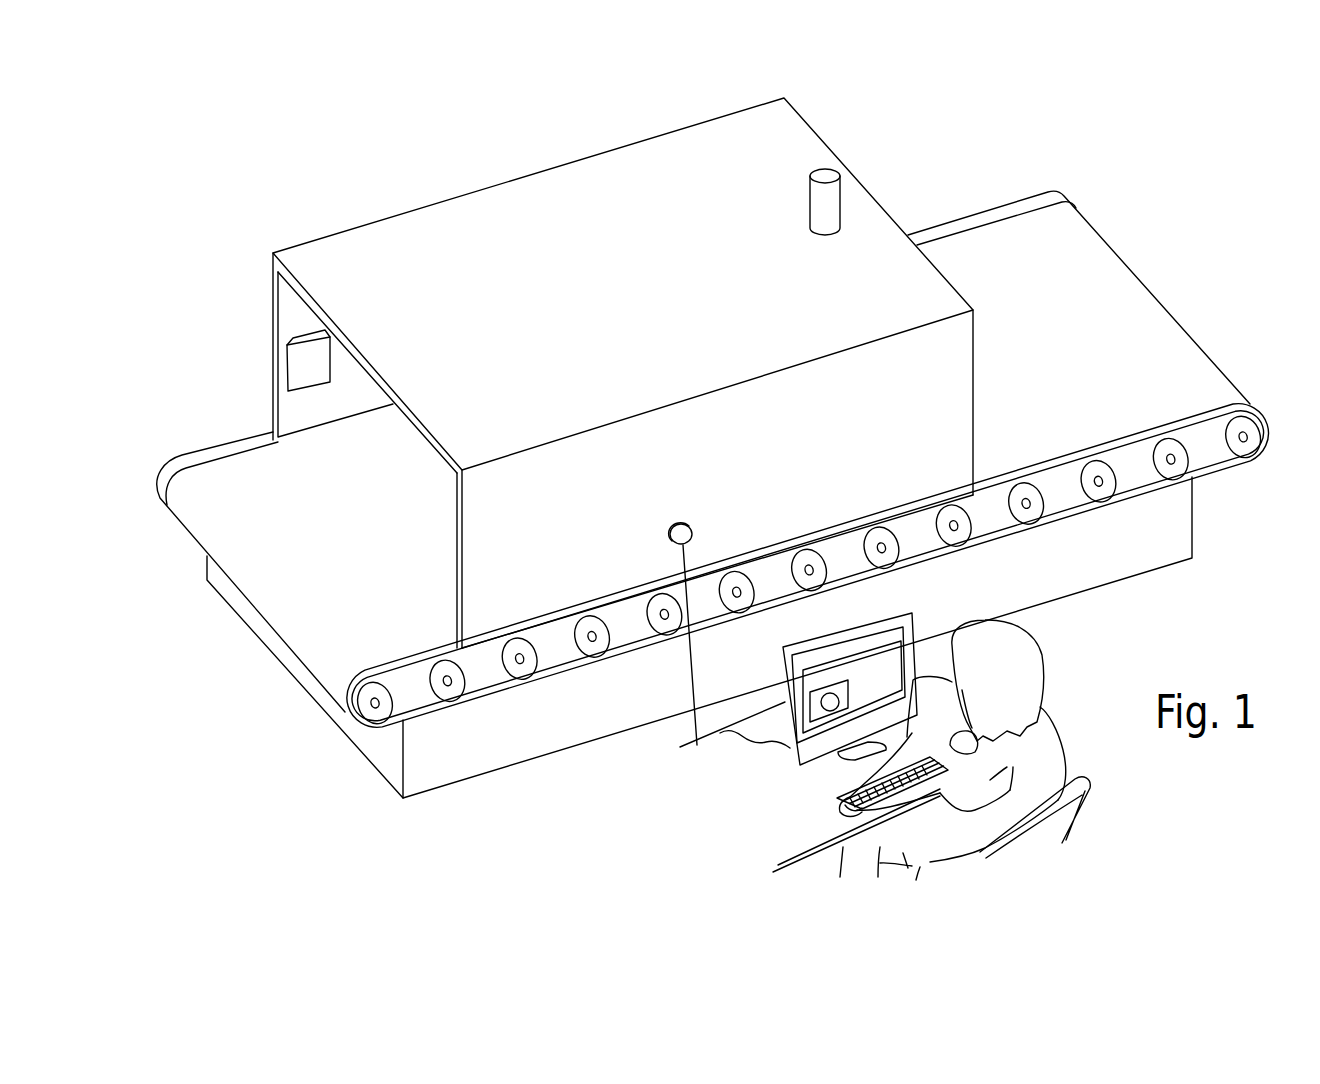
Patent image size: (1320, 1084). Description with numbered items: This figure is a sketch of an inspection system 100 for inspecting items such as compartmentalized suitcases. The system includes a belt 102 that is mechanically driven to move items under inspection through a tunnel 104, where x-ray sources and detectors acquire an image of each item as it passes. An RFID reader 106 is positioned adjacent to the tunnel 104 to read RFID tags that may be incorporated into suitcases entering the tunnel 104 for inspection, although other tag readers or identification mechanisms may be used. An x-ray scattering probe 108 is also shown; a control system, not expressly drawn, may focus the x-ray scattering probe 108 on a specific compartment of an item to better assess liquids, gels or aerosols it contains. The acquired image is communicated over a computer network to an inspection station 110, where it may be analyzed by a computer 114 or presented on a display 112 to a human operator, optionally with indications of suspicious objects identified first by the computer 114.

The inspection system 100 is at (387, 177).
The belt 102 is at (188, 515).
The tunnel 104 is at (304, 312).
The RFID reader 106 is at (299, 366).
The x-ray scattering probe 108 is at (826, 174).
The inspection station 110 is at (736, 826).
The display 112 is at (903, 634).
The computer 114 is at (790, 753).